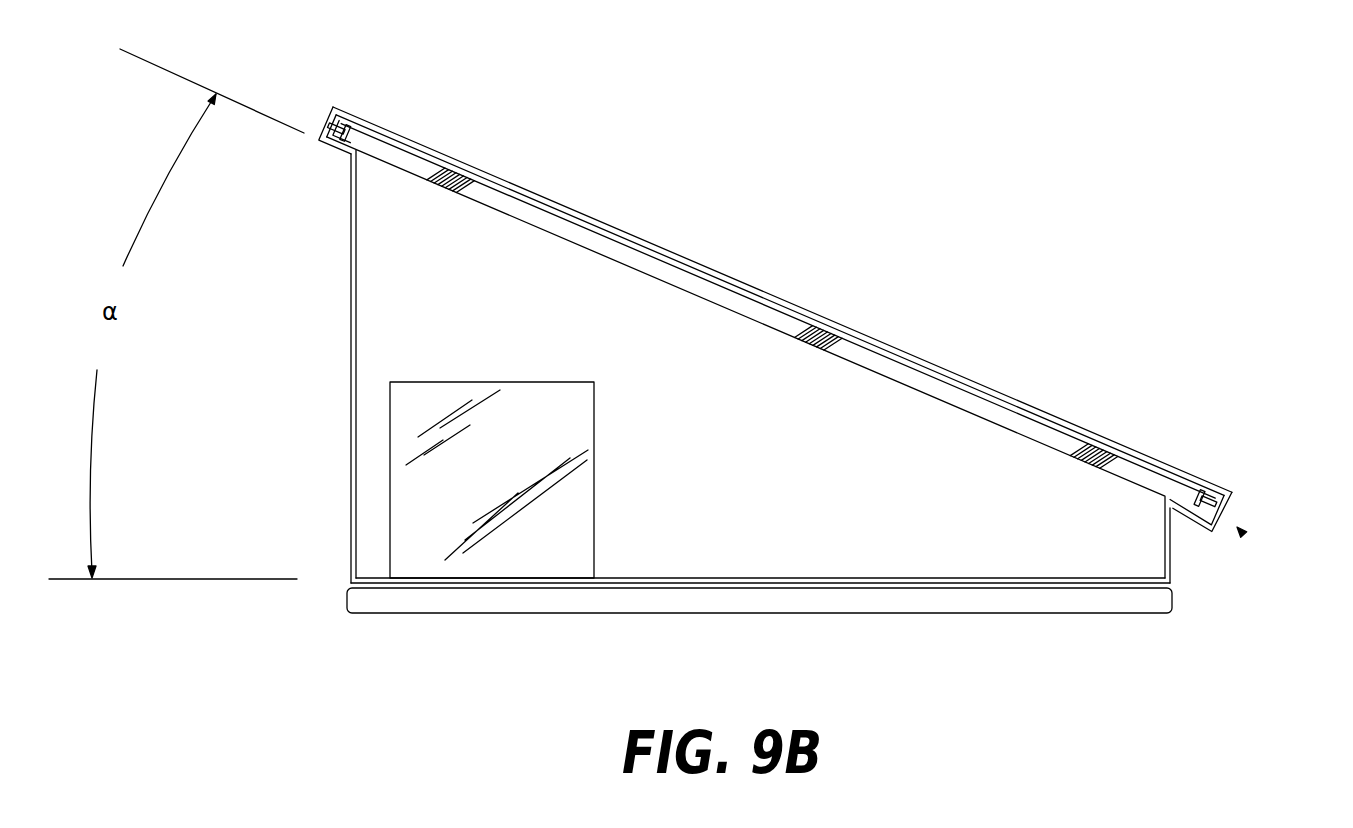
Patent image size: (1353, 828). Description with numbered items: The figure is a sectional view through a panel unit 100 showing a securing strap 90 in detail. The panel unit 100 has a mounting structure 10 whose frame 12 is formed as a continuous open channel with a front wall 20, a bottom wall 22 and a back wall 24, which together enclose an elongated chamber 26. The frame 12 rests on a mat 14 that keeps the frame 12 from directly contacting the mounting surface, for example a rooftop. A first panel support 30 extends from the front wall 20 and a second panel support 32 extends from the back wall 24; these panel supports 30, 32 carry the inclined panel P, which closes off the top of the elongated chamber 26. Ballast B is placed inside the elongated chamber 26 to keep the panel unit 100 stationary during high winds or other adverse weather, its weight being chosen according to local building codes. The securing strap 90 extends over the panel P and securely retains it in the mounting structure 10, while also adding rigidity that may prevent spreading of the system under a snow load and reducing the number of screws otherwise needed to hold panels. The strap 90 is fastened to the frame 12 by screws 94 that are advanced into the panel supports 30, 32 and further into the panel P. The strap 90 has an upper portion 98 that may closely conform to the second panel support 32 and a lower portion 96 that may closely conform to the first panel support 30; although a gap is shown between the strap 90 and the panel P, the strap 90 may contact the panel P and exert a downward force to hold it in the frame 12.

The mounting structure 10 is at (1040, 652).
The frame 12 is at (618, 586).
The mat 14 is at (820, 600).
The front wall 20 is at (1172, 547).
The bottom wall 22 is at (727, 585).
The back wall 24 is at (351, 370).
The elongated chamber 26 is at (895, 474).
The first panel support 30 is at (1183, 516).
The second panel support 32 is at (328, 148).
The securing strap 90 is at (923, 356).
The screws 94 is at (322, 120).
The lower portion 96 is at (1242, 532).
The upper portion 98 is at (331, 106).
The panel unit 100 is at (1044, 128).
The panel P is at (700, 284).
The ballast B is at (582, 419).